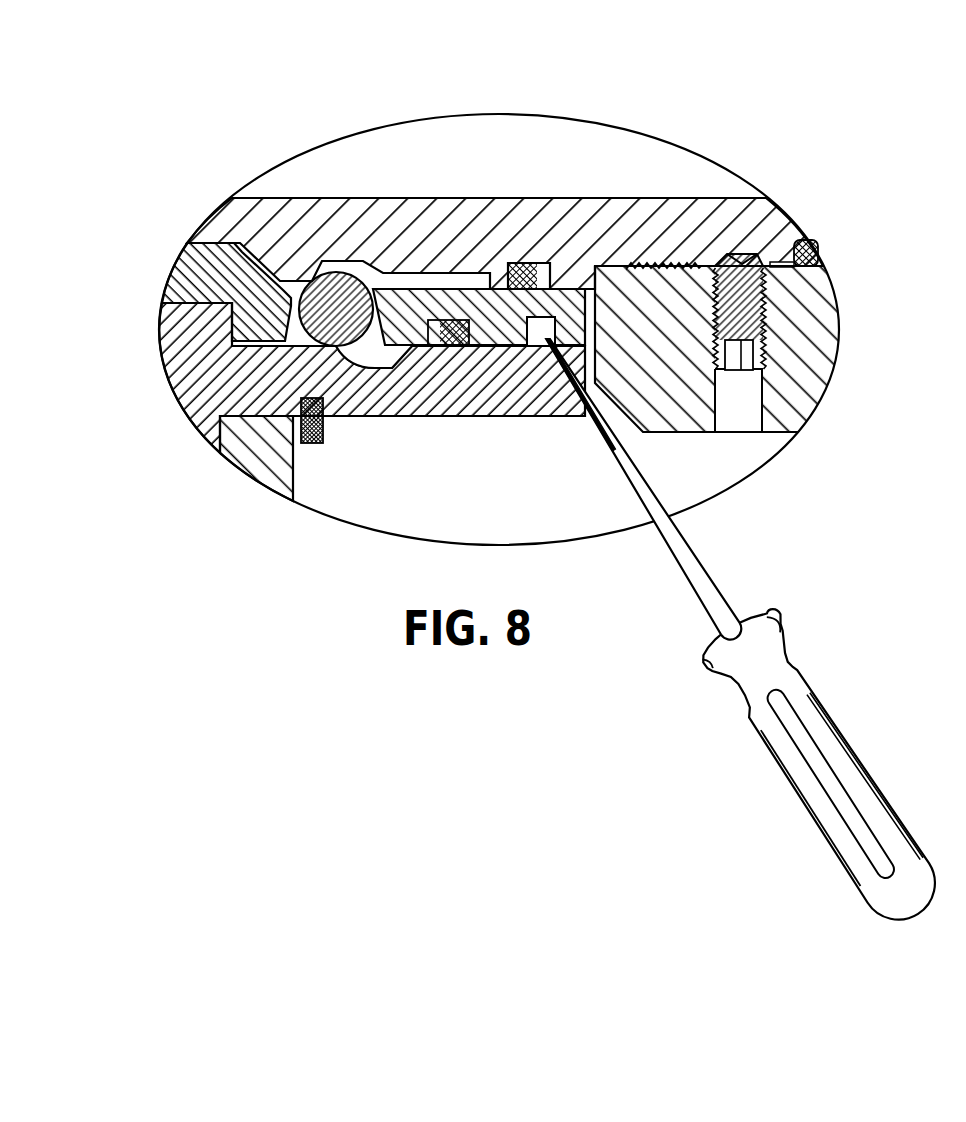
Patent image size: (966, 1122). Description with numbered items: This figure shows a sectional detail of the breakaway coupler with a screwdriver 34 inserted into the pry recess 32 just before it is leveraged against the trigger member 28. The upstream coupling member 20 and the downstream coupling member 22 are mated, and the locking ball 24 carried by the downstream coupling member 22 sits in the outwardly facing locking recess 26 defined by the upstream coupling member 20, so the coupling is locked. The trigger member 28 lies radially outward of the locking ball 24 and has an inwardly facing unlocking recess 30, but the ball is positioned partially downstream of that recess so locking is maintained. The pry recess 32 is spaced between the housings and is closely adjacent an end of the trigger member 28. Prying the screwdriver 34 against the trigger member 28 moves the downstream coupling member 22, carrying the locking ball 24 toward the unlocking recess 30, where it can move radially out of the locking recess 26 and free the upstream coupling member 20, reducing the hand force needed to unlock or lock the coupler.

The upstream coupling member 20 is at (550, 218).
The downstream coupling member 22 is at (206, 270).
The locking ball 24 is at (337, 279).
The locking recess 26 is at (360, 260).
The trigger member 28 is at (455, 411).
The unlocking recess 30 is at (392, 368).
The pry recess 32 is at (540, 323).
The screwdriver 34 is at (793, 665).